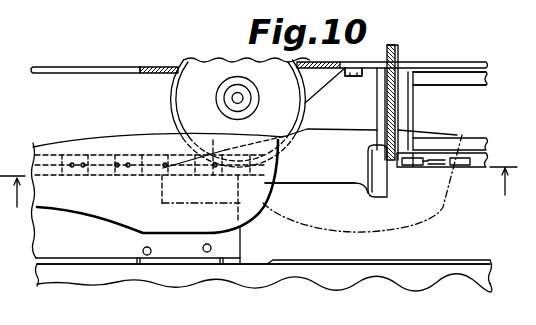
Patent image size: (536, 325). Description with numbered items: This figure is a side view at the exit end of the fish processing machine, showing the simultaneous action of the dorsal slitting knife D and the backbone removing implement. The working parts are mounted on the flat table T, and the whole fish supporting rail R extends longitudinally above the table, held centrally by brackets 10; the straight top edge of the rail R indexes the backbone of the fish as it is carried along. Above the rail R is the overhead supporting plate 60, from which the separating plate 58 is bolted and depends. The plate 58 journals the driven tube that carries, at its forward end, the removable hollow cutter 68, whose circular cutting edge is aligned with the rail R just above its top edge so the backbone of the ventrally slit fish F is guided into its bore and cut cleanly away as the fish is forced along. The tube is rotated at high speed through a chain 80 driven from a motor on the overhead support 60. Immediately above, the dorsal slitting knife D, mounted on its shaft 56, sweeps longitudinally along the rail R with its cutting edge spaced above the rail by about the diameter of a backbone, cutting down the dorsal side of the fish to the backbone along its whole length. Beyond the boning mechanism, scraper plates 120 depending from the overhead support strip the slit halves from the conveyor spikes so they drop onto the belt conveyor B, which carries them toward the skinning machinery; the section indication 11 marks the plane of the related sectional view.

The overhead supporting plate 60 is at (146, 46).
The shaft 56 is at (240, 100).
The plate 58 is at (358, 92).
The chain 80 is at (397, 54).
The scraper plates 120 is at (460, 140).
The hollow cutter 68 is at (273, 190).
The brackets 10 is at (192, 263).
The section line 11 is at (258, 197).
The dorsal slitting knife D is at (172, 89).
The fabric / frame body F is at (103, 202).
The fish supporting rail R is at (43, 232).
The conveyor B is at (448, 242).
The table T is at (403, 270).